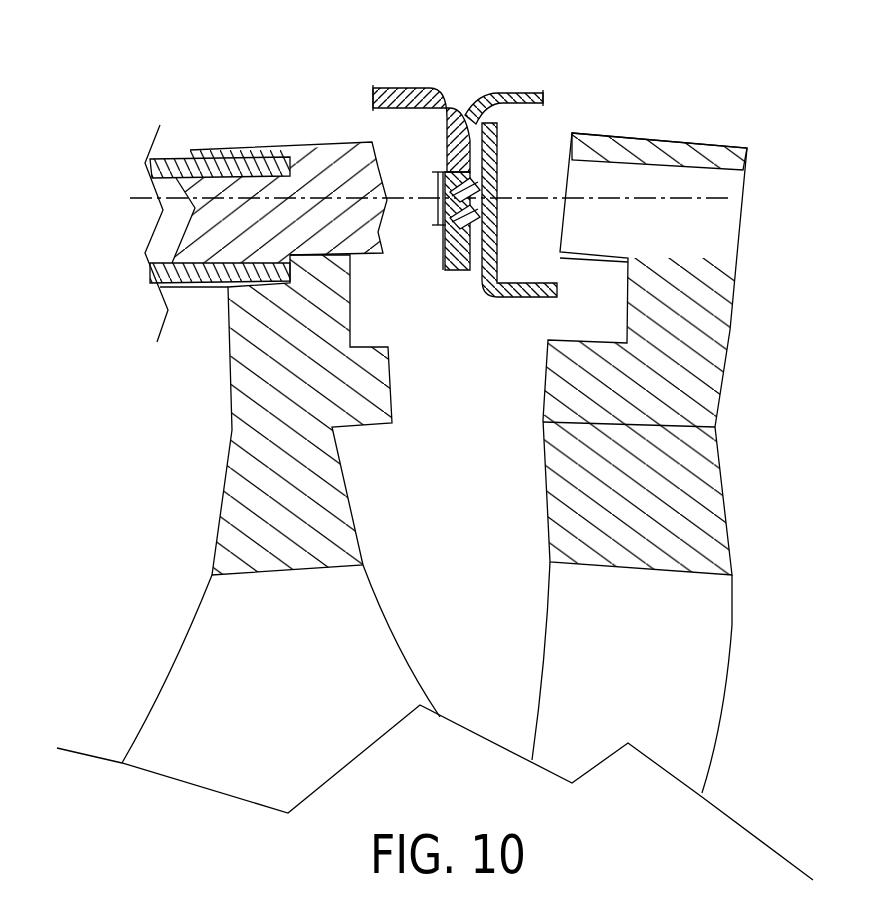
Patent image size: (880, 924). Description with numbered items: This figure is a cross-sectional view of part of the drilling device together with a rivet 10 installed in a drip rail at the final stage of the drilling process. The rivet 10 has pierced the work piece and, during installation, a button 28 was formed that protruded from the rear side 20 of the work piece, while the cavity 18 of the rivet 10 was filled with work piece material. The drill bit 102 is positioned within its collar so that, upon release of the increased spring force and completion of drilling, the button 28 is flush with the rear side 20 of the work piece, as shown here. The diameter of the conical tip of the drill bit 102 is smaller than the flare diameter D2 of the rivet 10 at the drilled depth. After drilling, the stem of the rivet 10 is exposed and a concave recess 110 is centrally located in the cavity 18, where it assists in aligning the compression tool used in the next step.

The drill bit 102 is at (307, 180).
The rear side 20 is at (452, 137).
The rivet 10 is at (495, 167).
The concave recess 110 is at (472, 189).
The cavity 18 is at (495, 207).
The button 28 is at (445, 235).
The flare diameter D2 is at (435, 203).